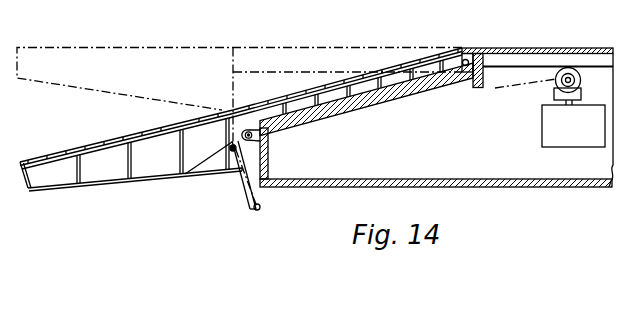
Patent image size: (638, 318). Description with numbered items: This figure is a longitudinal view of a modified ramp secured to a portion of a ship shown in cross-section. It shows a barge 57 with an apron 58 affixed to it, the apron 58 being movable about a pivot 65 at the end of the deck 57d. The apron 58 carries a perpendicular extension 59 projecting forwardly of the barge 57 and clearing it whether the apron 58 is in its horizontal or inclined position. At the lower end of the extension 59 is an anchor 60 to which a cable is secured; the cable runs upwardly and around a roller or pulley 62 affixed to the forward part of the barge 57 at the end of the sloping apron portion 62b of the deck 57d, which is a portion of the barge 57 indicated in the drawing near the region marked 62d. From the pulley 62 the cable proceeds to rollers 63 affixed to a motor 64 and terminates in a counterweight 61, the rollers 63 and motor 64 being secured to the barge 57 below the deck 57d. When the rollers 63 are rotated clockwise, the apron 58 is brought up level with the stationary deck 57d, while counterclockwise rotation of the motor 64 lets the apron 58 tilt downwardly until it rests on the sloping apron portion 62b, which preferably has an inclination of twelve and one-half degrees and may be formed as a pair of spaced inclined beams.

The barge 57 is at (545, 170).
The deck 57d is at (550, 48).
The apron 58 is at (102, 172).
The perpendicular extension 59 is at (247, 188).
The anchors 60 is at (258, 210).
The counterweight 61 is at (547, 125).
The rollers or pulleys 62 is at (256, 140).
The sloping apron portion 62b is at (404, 101).
The axis line 62d is at (495, 88).
The rollers 63 is at (553, 83).
The motor 64 is at (581, 82).
The pivot 65 is at (476, 52).